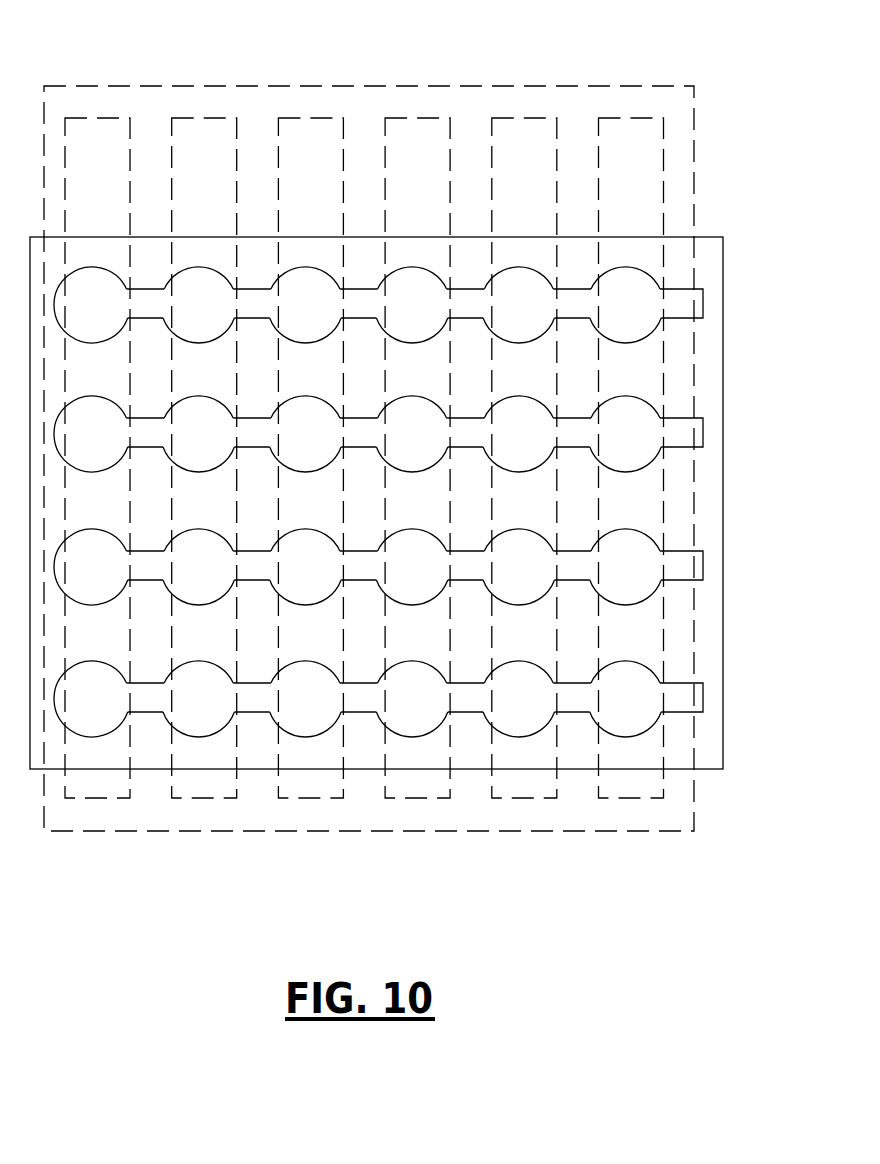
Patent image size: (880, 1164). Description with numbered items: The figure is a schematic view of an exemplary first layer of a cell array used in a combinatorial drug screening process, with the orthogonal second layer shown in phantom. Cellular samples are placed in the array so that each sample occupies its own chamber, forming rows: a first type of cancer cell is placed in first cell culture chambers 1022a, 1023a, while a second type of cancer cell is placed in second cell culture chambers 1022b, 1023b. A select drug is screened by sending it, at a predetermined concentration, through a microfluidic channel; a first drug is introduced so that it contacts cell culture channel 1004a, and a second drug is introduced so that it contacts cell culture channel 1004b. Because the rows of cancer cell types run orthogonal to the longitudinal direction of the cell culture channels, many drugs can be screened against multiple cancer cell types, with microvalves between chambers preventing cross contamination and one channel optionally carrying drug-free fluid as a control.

The second cell culture chamber 1023b is at (517, 268).
The second cell culture chamber 1022b is at (624, 268).
The cell culture channel 1004b is at (690, 302).
The first cell culture chamber 1023a is at (512, 737).
The first cell culture chamber 1022a is at (624, 737).
The cell culture channel 1004a is at (688, 699).